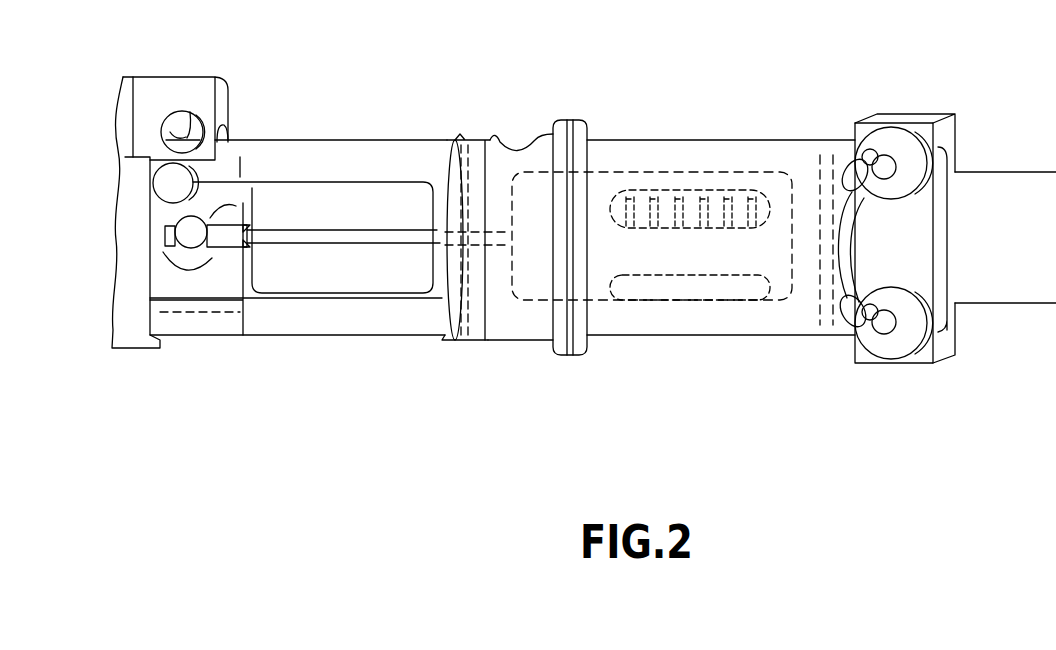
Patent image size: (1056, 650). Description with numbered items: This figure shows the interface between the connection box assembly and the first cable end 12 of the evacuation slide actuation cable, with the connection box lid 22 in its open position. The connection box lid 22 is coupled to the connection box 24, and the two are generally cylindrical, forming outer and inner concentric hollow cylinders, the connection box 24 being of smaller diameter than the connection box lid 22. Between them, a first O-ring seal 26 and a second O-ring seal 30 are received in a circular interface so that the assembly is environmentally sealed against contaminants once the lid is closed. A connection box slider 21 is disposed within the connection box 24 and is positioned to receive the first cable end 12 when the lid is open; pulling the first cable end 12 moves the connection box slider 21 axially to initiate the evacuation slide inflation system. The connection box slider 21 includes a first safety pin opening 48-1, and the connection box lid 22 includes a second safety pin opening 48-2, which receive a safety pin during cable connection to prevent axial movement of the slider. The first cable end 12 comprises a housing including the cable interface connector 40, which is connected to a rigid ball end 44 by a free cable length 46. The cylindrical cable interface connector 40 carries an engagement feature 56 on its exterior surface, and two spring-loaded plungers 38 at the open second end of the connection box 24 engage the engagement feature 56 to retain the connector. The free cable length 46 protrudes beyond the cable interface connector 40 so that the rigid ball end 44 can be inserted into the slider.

The first cable end 12 is at (377, 200).
The connection box slider 21 is at (223, 282).
The connection box lid 22 is at (133, 345).
The connection box 24 is at (563, 332).
The first O-ring seal 26 is at (455, 320).
The second O-ring seal 30 is at (830, 282).
The spring-loaded plunger 38 is at (897, 140).
The cable interface connector 40 is at (1008, 290).
The rigid ball end 44 is at (215, 228).
The free cable length 46 is at (338, 228).
The first safety pin opening 48-1 is at (192, 179).
The second safety pin opening 48-2 is at (188, 112).
The engagement feature 56 is at (903, 227).